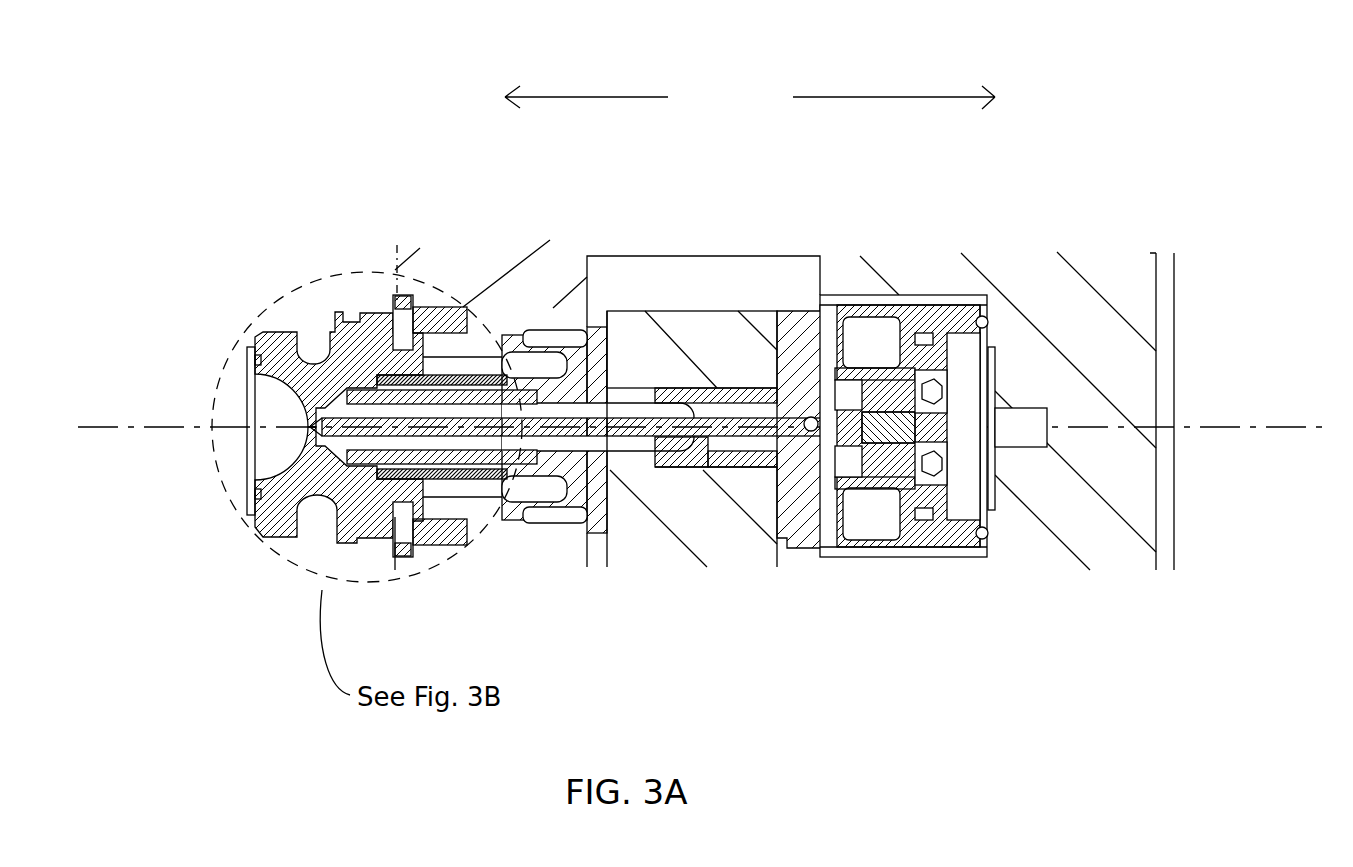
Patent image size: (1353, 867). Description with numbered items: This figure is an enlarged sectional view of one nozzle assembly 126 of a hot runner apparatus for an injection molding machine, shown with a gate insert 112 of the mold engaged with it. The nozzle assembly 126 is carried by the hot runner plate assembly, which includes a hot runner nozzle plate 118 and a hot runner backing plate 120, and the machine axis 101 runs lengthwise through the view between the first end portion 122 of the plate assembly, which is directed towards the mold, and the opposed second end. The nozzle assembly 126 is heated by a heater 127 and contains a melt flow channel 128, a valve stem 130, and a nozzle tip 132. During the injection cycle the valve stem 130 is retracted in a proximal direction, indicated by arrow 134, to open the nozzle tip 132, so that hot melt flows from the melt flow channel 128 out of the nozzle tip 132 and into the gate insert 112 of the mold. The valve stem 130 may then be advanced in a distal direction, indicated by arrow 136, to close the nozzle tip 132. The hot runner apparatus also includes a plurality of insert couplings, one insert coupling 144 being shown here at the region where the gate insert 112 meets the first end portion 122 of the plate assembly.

The machine axis 101 is at (1250, 427).
The gate insert 112 is at (262, 330).
The hot runner nozzle plate 118 is at (511, 305).
The hot runner backing plate 120 is at (1133, 545).
The first end portion 122 is at (443, 245).
The nozzle assembly 126 is at (603, 495).
The heater 127 is at (482, 500).
The melt flow channel 128 is at (640, 442).
The valve stem 130 is at (818, 430).
The nozzle tip 132 is at (340, 522).
The arrow indicating proximal direction 134 is at (907, 97).
The arrow indicating distal direction 136 is at (597, 97).
The insert coupling 144 is at (418, 508).